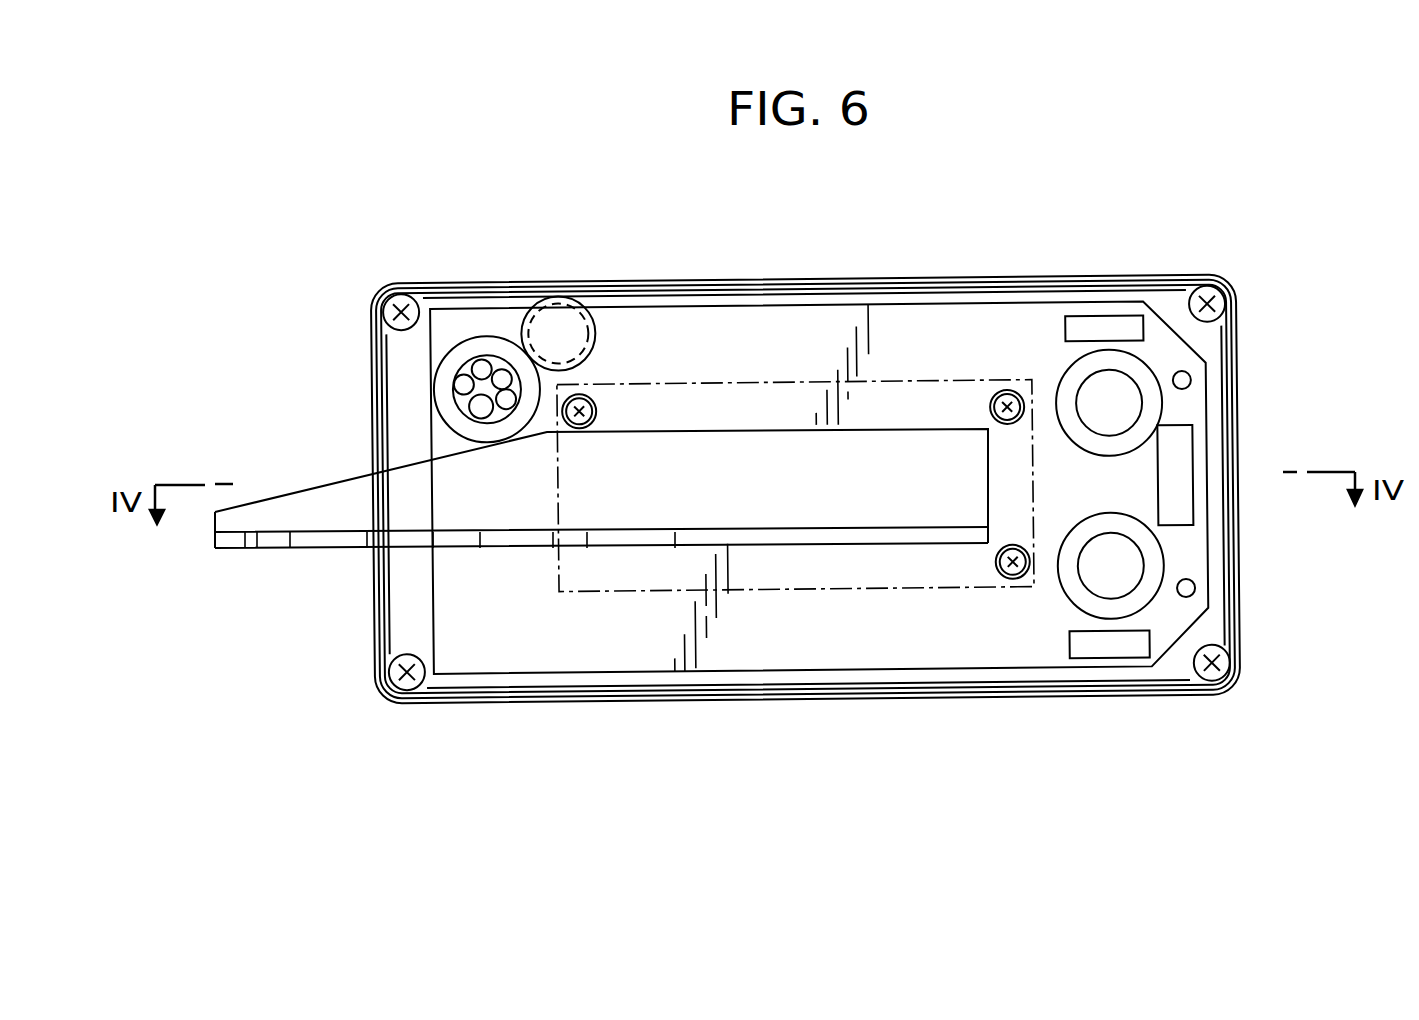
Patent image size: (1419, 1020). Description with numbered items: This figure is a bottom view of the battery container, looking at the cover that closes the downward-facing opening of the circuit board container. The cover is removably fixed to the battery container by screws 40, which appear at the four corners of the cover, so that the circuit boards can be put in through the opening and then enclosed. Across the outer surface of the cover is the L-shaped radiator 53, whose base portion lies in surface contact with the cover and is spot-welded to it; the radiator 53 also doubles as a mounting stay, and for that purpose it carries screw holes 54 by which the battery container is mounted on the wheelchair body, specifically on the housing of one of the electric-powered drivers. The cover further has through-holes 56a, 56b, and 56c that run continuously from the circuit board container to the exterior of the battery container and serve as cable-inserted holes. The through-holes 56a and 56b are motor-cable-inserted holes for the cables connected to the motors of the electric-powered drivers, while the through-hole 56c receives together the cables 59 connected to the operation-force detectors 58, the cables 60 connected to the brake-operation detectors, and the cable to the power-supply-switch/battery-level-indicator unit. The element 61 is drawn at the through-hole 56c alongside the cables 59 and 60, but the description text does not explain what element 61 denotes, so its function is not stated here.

The screw 40 is at (384, 316).
The radiator 53 is at (848, 532).
The screw hole 54 is at (258, 550).
The through-hole 56a is at (1093, 384).
The through-hole 56b is at (1105, 590).
The through-hole 56c is at (448, 362).
The operation-force detector 58 is at (1125, 380).
The cable 59 is at (487, 366).
The cable 60 is at (455, 388).
The connector pin 61 is at (478, 413).